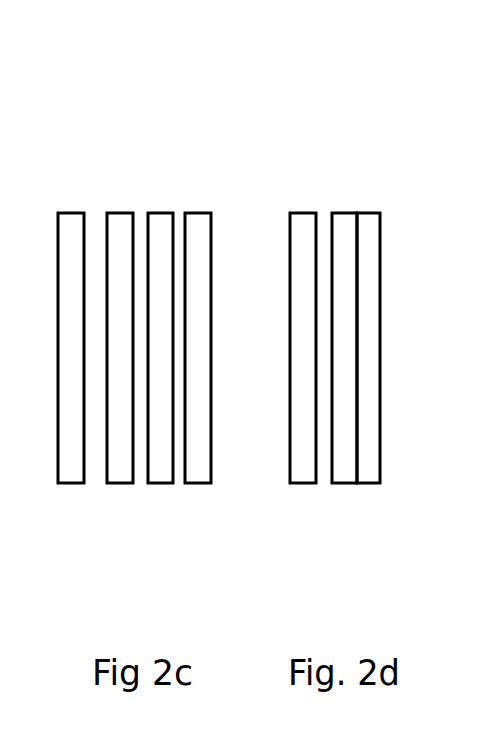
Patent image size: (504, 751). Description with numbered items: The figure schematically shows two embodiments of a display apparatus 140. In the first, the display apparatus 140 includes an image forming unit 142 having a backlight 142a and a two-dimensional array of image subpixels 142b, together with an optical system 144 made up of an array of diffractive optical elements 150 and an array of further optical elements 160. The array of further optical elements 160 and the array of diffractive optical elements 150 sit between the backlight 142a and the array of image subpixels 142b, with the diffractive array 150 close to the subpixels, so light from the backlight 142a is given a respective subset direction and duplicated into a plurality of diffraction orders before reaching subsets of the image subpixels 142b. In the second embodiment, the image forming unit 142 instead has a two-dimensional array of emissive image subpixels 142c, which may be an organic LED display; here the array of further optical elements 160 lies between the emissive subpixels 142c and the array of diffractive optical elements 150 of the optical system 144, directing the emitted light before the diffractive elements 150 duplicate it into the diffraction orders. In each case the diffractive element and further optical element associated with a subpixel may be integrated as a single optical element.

In FIG. 2C, the display apparatus 140 is at (54, 88).
In FIG. 2D, the display apparatus 140 is at (279, 87).
In FIG. 2C, the image forming unit 142 is at (77, 133).
In FIG. 2D, the image forming unit 142 is at (303, 133).
In FIG. 2C, the backlight 142a is at (72, 217).
In FIG. 2C, the two-dimensional array of image subpixels 142b is at (197, 219).
In FIG. 2D, the two-dimensional array of emissive image subpixels 142c is at (307, 220).
In FIG. 2C, the optical system 144 is at (135, 568).
In FIG. 2D, the optical system 144 is at (323, 570).
In FIG. 2C, the array of diffractive optical elements 150 is at (158, 467).
In FIG. 2D, the array of diffractive optical elements 150 is at (362, 465).
In FIG. 2C, the array of further optical elements 160 is at (122, 467).
In FIG. 2D, the array of further optical elements 160 is at (340, 465).